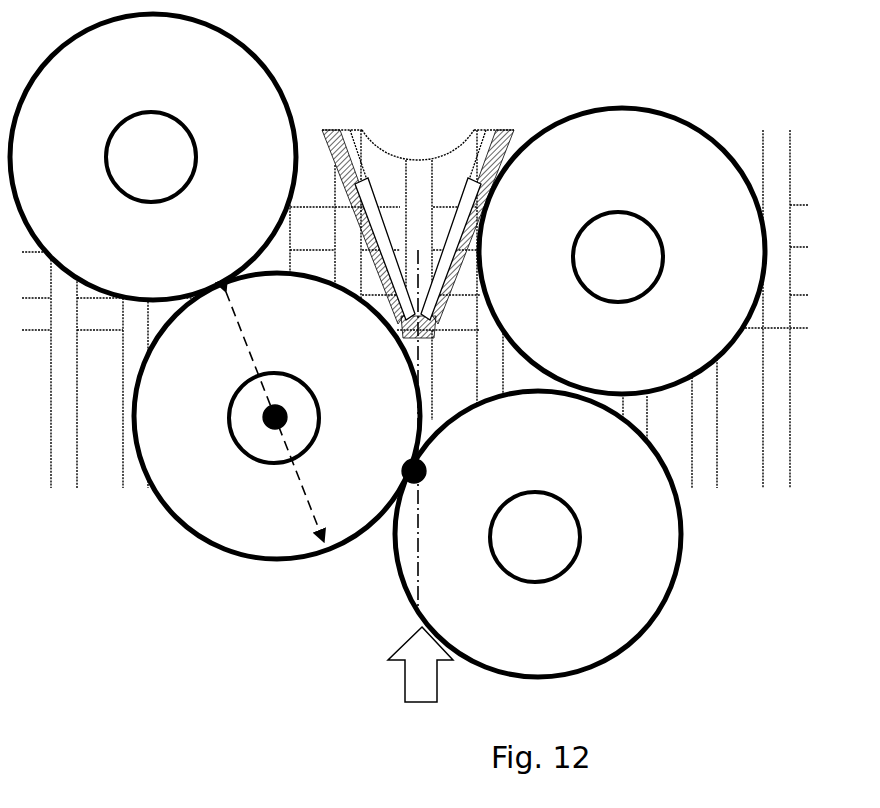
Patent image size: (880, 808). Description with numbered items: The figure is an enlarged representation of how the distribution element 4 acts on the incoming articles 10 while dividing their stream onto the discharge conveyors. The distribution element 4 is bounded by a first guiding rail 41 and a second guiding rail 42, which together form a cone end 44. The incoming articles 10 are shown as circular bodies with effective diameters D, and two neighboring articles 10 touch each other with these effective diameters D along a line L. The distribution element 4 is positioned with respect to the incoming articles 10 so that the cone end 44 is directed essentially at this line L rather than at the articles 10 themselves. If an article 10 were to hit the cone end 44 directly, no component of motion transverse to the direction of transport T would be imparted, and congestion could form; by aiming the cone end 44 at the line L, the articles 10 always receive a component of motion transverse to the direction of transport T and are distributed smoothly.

The article 10 is at (88, 108).
The distribution element 4 is at (365, 173).
The first guiding rail 41 is at (360, 213).
The second guiding rail 42 is at (487, 227).
The cone end 44 is at (412, 341).
The effective diameter D is at (250, 357).
The line L is at (423, 417).
The direction of transport T is at (415, 676).